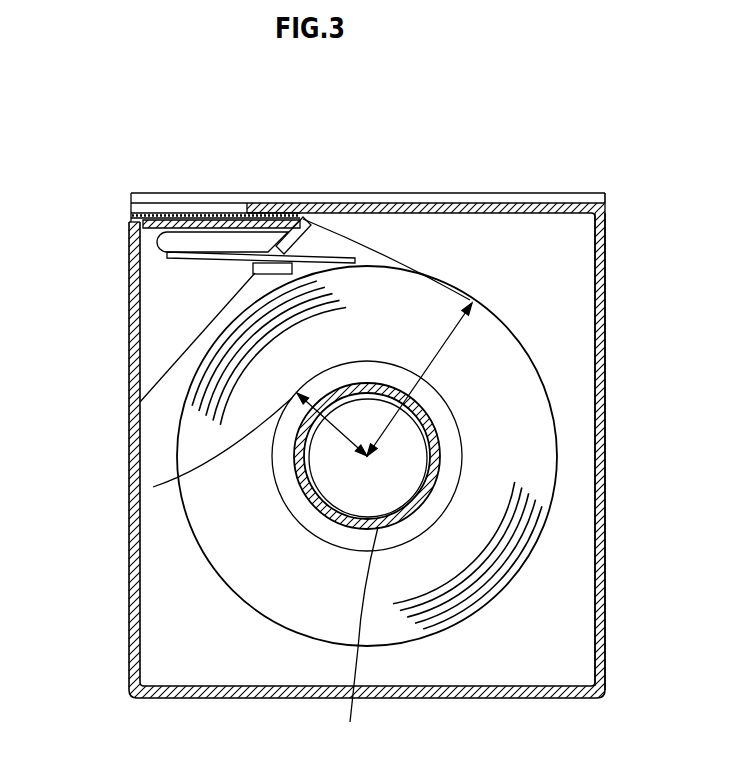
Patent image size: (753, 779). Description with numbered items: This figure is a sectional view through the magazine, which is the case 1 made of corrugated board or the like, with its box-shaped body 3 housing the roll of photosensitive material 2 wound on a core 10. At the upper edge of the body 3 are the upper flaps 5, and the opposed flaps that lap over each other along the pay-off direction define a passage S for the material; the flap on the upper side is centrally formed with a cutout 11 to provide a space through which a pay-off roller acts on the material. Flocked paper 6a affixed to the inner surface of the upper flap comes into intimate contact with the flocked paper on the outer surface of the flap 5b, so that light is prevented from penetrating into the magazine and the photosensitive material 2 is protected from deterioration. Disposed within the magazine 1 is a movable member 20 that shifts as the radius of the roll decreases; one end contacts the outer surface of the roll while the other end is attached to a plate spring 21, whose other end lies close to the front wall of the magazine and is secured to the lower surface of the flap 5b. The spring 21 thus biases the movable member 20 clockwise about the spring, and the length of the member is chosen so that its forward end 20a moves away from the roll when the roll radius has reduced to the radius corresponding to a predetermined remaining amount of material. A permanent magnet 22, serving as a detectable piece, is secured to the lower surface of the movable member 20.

The case 1 is at (617, 258).
The roll of photosensitive material 2 is at (500, 358).
The box-shaped body 3 is at (603, 424).
The upper flaps 5 is at (408, 207).
The flap 5b is at (141, 226).
The flocked paper 6a is at (233, 213).
The core 10 is at (259, 512).
The cutout 11 is at (160, 206).
The movable member 20 is at (187, 258).
The forward end 20a is at (378, 250).
The plate spring 21 is at (158, 244).
The permanent magnet 22 is at (253, 271).
The passage S is at (328, 227).